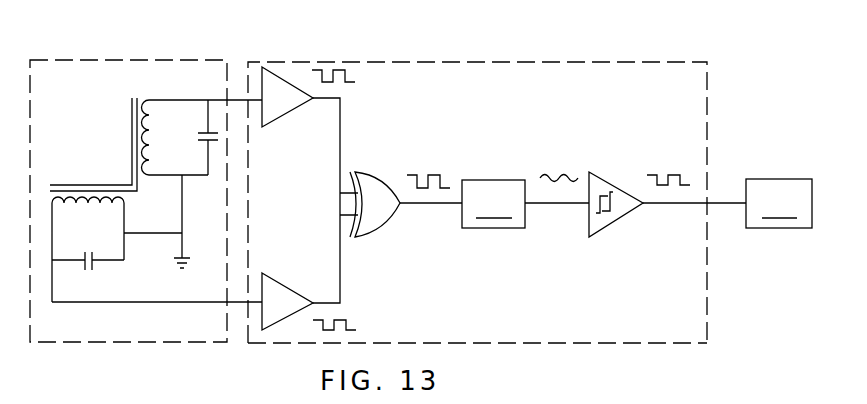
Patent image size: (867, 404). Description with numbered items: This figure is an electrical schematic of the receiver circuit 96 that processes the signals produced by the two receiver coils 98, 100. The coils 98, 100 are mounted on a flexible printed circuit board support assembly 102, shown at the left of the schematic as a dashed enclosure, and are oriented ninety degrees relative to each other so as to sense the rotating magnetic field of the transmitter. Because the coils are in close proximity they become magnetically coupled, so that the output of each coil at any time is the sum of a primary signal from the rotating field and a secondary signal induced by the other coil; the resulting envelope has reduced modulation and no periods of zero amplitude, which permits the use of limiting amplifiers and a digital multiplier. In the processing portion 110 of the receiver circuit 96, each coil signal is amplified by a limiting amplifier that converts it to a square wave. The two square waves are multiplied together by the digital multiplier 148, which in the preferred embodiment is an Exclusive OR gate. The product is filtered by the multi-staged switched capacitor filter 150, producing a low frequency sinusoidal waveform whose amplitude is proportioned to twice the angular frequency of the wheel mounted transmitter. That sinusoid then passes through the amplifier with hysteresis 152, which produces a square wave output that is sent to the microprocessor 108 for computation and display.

The receiver circuit 96 is at (617, 48).
The receiver coil 98 is at (124, 203).
The receiver coil 100 is at (144, 99).
The flexible printed circuit board support assembly 102 is at (175, 343).
The microprocessor 108 is at (779, 203).
The processing circuit 110 is at (565, 345).
The digital multiplier 148 is at (371, 233).
The multi-staged switched capacitor filter 150 is at (525, 202).
The amplifier with hysteresis 152 is at (603, 228).